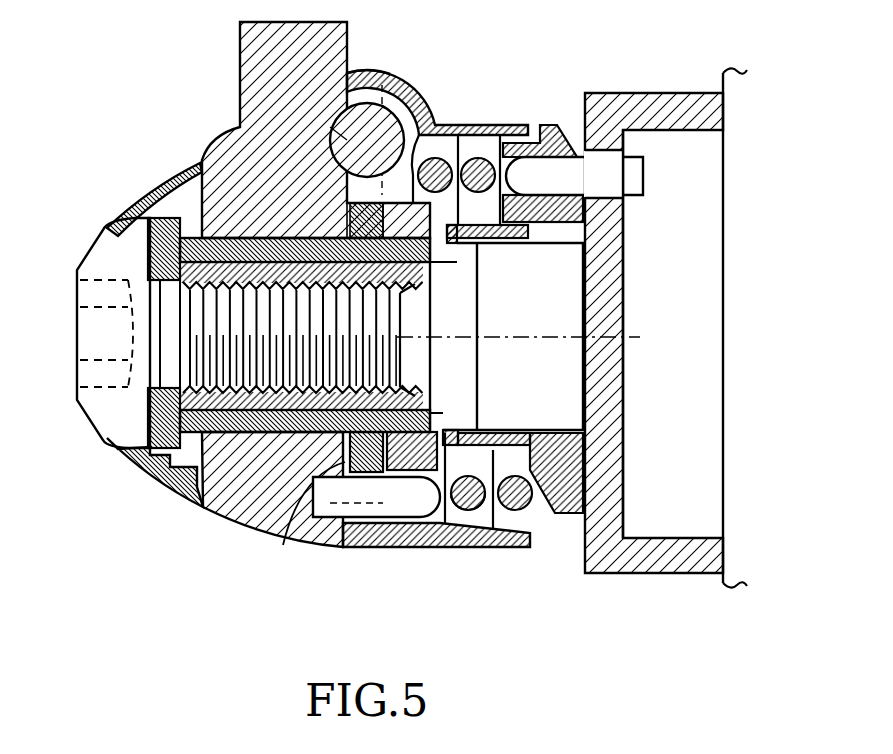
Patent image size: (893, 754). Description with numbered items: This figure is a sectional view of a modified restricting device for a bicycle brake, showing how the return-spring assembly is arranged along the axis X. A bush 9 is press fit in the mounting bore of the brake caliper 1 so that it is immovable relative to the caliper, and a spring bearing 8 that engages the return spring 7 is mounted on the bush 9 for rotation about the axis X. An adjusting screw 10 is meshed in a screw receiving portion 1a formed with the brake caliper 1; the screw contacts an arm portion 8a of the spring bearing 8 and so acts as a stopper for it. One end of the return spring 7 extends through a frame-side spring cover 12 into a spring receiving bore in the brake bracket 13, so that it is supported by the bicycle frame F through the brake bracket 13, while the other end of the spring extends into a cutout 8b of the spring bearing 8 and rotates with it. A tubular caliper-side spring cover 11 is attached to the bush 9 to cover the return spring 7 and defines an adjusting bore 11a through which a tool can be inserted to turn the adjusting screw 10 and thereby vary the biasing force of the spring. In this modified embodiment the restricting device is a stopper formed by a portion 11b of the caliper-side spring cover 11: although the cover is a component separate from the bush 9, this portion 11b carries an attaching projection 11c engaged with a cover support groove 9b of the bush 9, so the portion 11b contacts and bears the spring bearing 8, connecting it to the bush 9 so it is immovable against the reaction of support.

The brake caliper 1 is at (240, 52).
The screw receiving portion 1a is at (363, 72).
The return spring 7 is at (473, 513).
The spring bearing 8 is at (283, 530).
The arm portion 8a is at (332, 128).
The cutout 8b is at (343, 500).
The bush 9 is at (240, 240).
The cover support groove 9b is at (327, 234).
The adjusting screw 10 is at (348, 112).
The caliper-side spring cover 11 is at (463, 547).
The adjusting bore 11a is at (432, 107).
The portion of the caliper-side spring cover 11b is at (477, 125).
The attaching projection 11c is at (421, 264).
The frame-side spring cover 12 is at (560, 218).
The brake bracket 13 is at (608, 265).
The bicycle frame F is at (723, 413).
The axis X is at (531, 340).